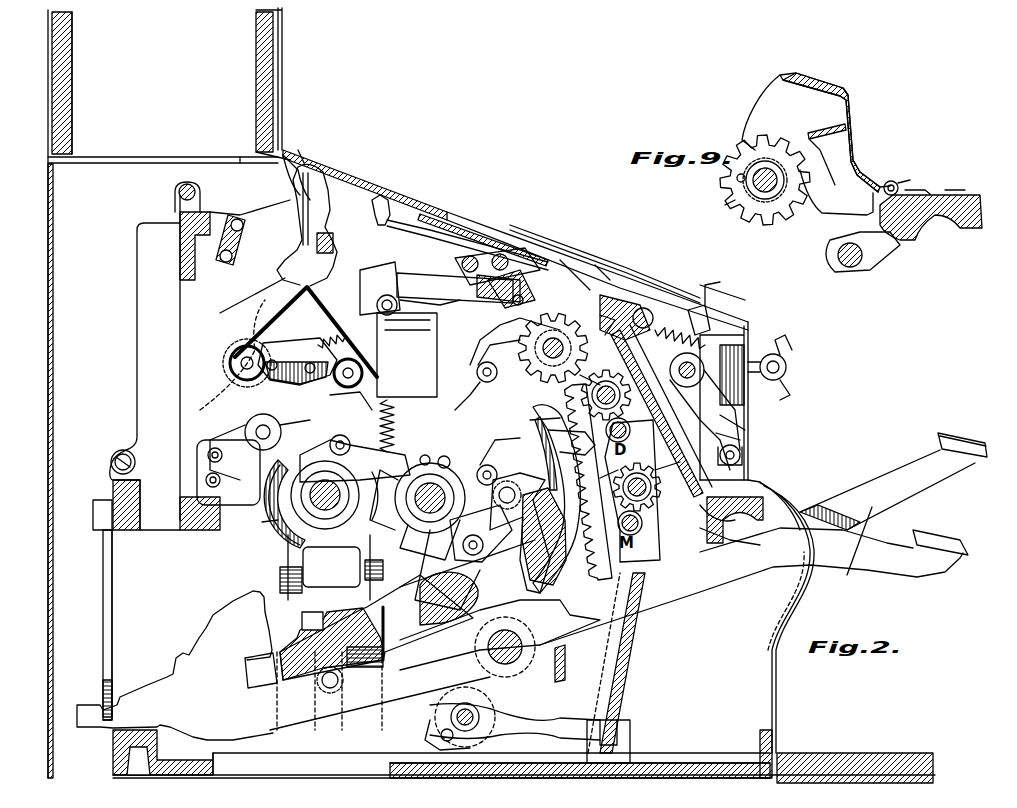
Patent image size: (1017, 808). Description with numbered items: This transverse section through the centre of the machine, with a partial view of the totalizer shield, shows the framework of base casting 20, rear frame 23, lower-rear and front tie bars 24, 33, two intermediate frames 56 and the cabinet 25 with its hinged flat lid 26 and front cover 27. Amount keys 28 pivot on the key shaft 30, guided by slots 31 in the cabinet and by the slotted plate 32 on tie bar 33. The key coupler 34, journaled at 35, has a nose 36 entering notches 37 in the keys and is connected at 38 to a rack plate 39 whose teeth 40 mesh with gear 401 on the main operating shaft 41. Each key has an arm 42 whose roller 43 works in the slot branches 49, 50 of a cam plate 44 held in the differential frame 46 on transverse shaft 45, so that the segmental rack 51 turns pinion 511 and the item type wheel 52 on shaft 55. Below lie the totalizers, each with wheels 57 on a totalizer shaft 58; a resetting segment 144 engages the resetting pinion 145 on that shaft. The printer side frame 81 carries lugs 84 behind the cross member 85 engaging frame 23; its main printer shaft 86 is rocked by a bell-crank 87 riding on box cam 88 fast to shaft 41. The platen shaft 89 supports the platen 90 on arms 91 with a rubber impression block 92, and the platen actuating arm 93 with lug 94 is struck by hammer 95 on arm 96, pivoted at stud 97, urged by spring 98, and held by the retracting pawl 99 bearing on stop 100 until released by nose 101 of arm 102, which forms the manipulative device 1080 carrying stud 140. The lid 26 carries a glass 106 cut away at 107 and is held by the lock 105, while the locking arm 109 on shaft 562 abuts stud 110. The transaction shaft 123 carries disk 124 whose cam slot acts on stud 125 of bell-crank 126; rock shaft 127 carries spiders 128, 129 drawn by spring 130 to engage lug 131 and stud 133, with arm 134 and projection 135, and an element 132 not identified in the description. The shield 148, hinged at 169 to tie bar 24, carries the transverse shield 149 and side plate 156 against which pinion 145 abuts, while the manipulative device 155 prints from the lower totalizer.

In FIG. 2, the base casting 20 is at (700, 760).
In FIG. 2, the rear frame 23 is at (156, 362).
In FIG. 2, the tie bar 24 is at (765, 488).
In FIG. 9, the tie bar 24 is at (935, 230).
In FIG. 2, the cabinet 25 is at (53, 330).
In FIG. 2, the flat lid 26 is at (395, 192).
In FIG. 2, the front cover 27 is at (747, 421).
In FIG. 2, the amount keys 28 is at (870, 555).
In FIG. 2, the key shaft 30 is at (512, 635).
In FIG. 2, the slots 31 is at (776, 632).
In FIG. 2, the vertically slotted plate 32 is at (112, 566).
In FIG. 2, the tie bar 33 is at (111, 464).
In FIG. 2, the key coupler 34 is at (441, 593).
In FIG. 2, the key coupler journal 35 is at (447, 570).
In FIG. 2, the nose 36 is at (380, 652).
In FIG. 2, the notches 37 is at (245, 672).
In FIG. 2, the rack plate connection 38 is at (331, 644).
In FIG. 2, the rack plate 39 is at (331, 568).
In FIG. 2, the rack teeth 40 is at (303, 560).
In FIG. 2, the main operating shaft 41 is at (327, 510).
In FIG. 2, the gear 401 is at (272, 528).
In FIG. 2, the arm 42 is at (518, 538).
In FIG. 2, the anti-friction roller 43 is at (496, 464).
In FIG. 2, the cam plates 44 is at (549, 499).
In FIG. 2, the transverse shaft 45 is at (440, 475).
In FIG. 2, the differential frame 46 is at (478, 462).
In FIG. 2, the graduated slot branch 49 is at (519, 491).
In FIG. 2, the arcuate slot branch 50 is at (490, 525).
In FIG. 2, the segmental rack 51 is at (584, 482).
In FIG. 2, the item type wheel 52 is at (530, 345).
In FIG. 2, the type carrier shaft 55 is at (603, 329).
In FIG. 2, the intermediate frames 56 is at (228, 472).
In FIG. 2, the totalizer wheels 57 is at (601, 419).
In FIG. 2, the totalizer shaft 58 is at (621, 434).
In FIG. 9, the totalizer shaft 58 is at (778, 195).
In FIG. 2, the right printer side frame 81 is at (273, 234).
In FIG. 2, the lugs 84 is at (215, 215).
In FIG. 2, the cross member 85 is at (236, 262).
In FIG. 2, the main printer shaft 86 is at (282, 428).
In FIG. 2, the bell-crank 87 is at (355, 449).
In FIG. 2, the box cam 88 is at (282, 510).
In FIG. 2, the platen shaft 89 is at (510, 252).
In FIG. 2, the platen 90 is at (601, 258).
In FIG. 2, the platen arms 91 is at (565, 260).
In FIG. 2, the rubber impression block 92 is at (626, 315).
In FIG. 2, the platen actuating arm 93 is at (458, 288).
In FIG. 2, the lug 94 is at (430, 306).
In FIG. 2, the hammer 95 is at (407, 355).
In FIG. 2, the hammer arm 96 is at (275, 318).
In FIG. 2, the stud 97 is at (228, 363).
In FIG. 2, the spring 98 is at (396, 417).
In FIG. 2, the retracting pawl 99 is at (332, 398).
In FIG. 2, the adjustable stop 100 is at (290, 348).
In FIG. 2, the nose 101 is at (384, 283).
In FIG. 2, the arm 102 is at (215, 385).
In FIG. 2, the lock 105 is at (750, 330).
In FIG. 2, the glass 106 is at (475, 222).
In FIG. 2, the glass cut-away 107 is at (615, 276).
In FIG. 2, the locking arm 109 is at (536, 429).
In FIG. 2, the stud 110 is at (486, 375).
In FIG. 2, the transaction shaft 123 is at (475, 710).
In FIG. 2, the disk 124 is at (520, 716).
In FIG. 2, the stud 125 is at (440, 734).
In FIG. 2, the bell-crank 126 is at (636, 640).
In FIG. 2, the rock shaft 127 is at (755, 360).
In FIG. 2, the locking spider 128 is at (571, 439).
In FIG. 2, the locking spider 129 is at (728, 290).
In FIG. 2, the spring 130 is at (660, 325).
In FIG. 2, the lug 131 is at (632, 486).
In FIG. 2, the stud 132 is at (745, 452).
In FIG. 2, the stud 133 is at (710, 300).
In FIG. 2, the arm 134 is at (750, 385).
In FIG. 2, the projection 135 is at (750, 437).
In FIG. 2, the stud 140 is at (377, 301).
In FIG. 2, the resetting segment 144 is at (506, 367).
In FIG. 9, the resetting pinion 145 is at (735, 200).
In FIG. 2, the shield 148 is at (661, 414).
In FIG. 9, the shield 148 is at (855, 135).
In FIG. 2, the transverse shield 149 is at (672, 473).
In FIG. 9, the transverse shield 149 is at (810, 136).
In FIG. 2, the manipulative device 155 is at (308, 153).
In FIG. 9, the side plate 156 is at (807, 145).
In FIG. 2, the hinges 169 is at (729, 520).
In FIG. 9, the hinges 169 is at (905, 185).
In FIG. 2, the pinion 511 is at (525, 290).
In FIG. 2, the shaft 562 is at (735, 540).
In FIG. 9, the shaft 562 is at (852, 268).
In FIG. 2, the manipulative device 1080 is at (401, 211).